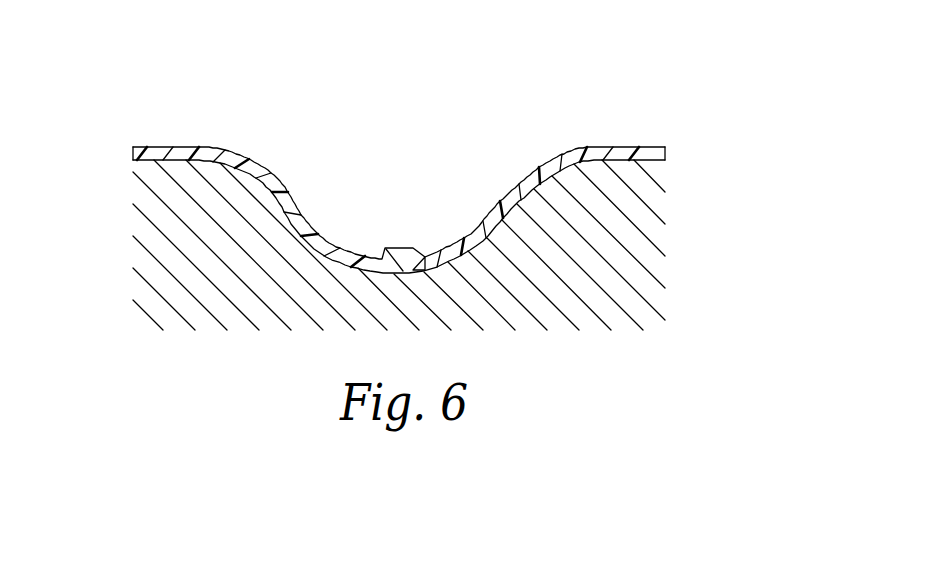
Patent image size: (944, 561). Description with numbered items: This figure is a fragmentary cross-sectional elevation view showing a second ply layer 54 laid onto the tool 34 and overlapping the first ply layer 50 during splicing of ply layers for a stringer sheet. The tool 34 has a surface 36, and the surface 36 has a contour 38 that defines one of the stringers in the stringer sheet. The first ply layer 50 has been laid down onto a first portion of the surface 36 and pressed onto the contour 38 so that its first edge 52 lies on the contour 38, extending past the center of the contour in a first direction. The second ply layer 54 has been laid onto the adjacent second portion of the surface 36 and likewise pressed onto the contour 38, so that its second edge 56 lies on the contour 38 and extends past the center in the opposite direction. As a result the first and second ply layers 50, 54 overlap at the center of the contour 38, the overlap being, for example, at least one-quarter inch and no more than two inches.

The tool 34 is at (618, 243).
The surface 36 is at (250, 177).
The contour 38 is at (407, 140).
The first ply layer 50 is at (291, 192).
The first edge 52 is at (419, 243).
The second ply layer 54 is at (503, 196).
The second edge 56 is at (378, 242).